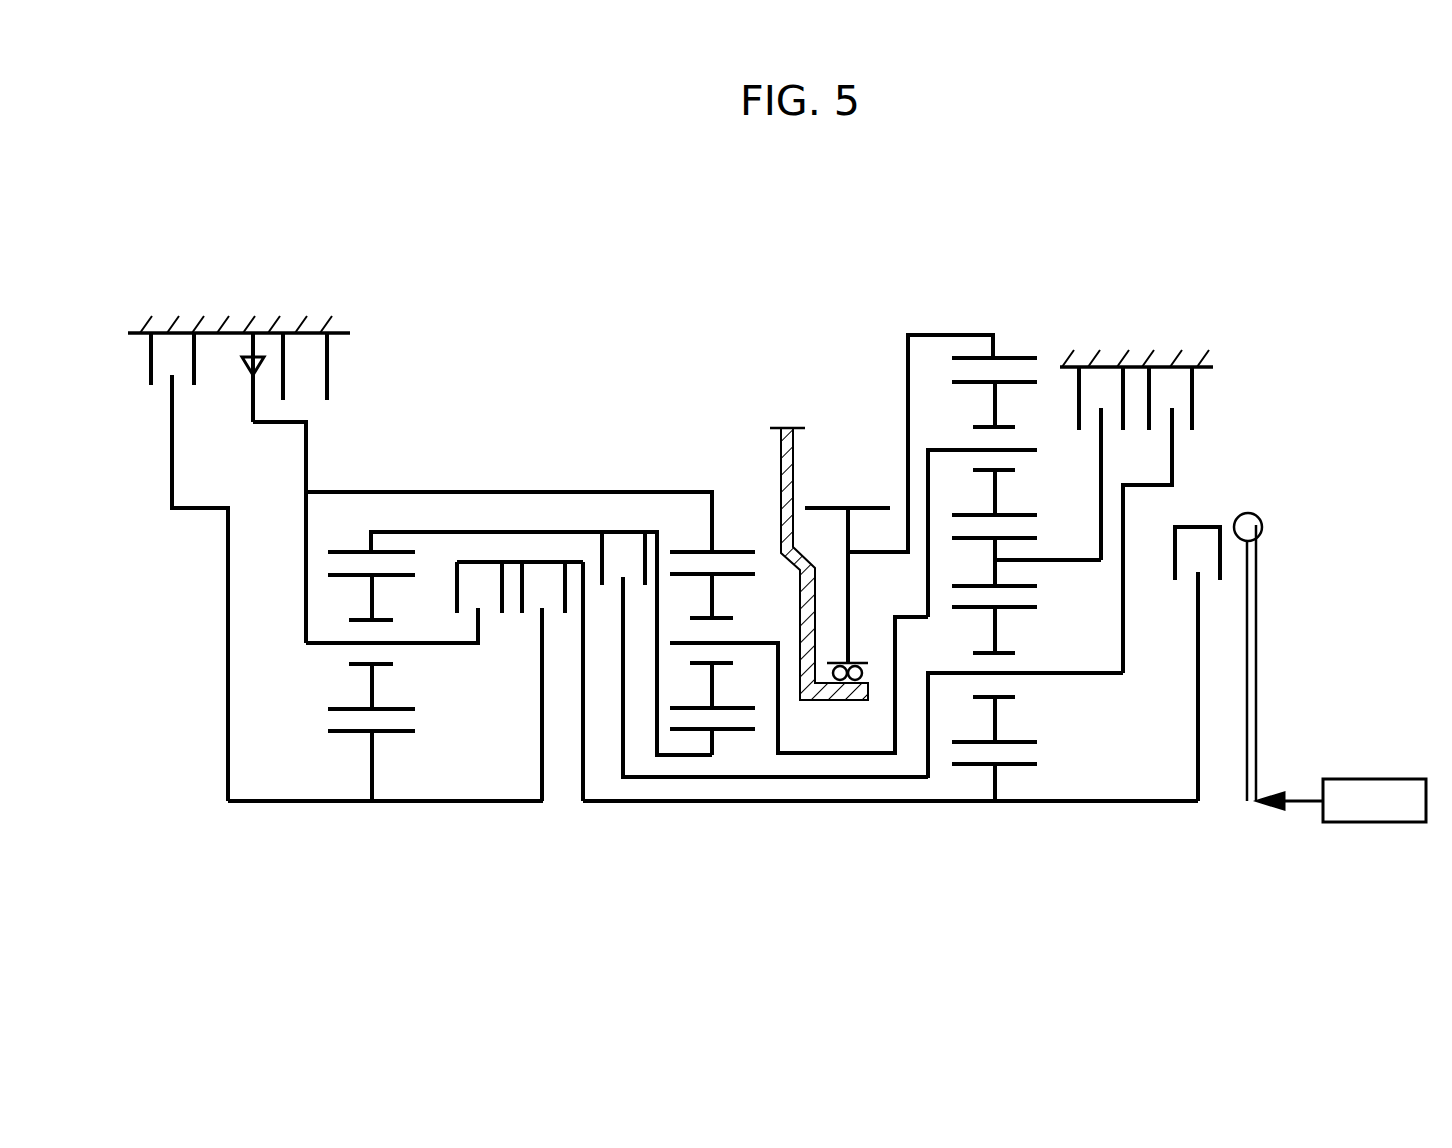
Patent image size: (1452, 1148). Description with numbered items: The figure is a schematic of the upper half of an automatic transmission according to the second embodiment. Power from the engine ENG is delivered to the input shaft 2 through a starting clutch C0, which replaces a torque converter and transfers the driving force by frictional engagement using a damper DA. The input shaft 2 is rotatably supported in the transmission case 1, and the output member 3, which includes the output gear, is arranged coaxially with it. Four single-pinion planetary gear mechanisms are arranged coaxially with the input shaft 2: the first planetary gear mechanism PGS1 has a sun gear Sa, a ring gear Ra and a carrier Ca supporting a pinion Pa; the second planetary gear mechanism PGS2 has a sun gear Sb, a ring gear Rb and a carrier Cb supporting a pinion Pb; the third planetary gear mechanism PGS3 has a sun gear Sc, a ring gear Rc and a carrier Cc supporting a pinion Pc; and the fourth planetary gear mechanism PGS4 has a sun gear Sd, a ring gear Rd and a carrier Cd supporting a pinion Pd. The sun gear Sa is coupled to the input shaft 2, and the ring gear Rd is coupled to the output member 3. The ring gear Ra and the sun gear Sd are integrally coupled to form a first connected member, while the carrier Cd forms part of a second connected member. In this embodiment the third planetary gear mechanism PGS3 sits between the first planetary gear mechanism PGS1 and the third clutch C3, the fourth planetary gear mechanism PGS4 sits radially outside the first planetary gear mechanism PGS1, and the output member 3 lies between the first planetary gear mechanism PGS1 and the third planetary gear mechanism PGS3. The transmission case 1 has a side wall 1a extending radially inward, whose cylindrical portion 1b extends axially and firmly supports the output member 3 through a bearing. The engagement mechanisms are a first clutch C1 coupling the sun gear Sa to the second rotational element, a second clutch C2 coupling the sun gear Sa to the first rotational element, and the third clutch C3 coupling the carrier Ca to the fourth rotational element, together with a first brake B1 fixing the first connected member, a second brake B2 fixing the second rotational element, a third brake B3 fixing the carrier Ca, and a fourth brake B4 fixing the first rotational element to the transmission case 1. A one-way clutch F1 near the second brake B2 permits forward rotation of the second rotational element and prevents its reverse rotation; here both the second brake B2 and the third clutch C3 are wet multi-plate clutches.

The transmission case 1 is at (263, 318).
The side wall 1a is at (797, 428).
The cylindrical portion 1b is at (855, 703).
The input shaft 2 is at (1168, 805).
The output member 3 is at (880, 505).
The first brake B1 is at (1101, 463).
The second brake B2 is at (305, 366).
The third brake B3 is at (1157, 520).
The fourth brake B4 is at (189, 567).
The one-way clutch F1 is at (245, 370).
The starting clutch C0 is at (1197, 664).
The first clutch C1 is at (520, 587).
The second clutch C2 is at (552, 681).
The third clutch C3 is at (765, 654).
The first planetary gear mechanism PGS1 is at (1003, 823).
The second planetary gear mechanism PGS2 is at (376, 821).
The third planetary gear mechanism PGS3 is at (721, 823).
The fourth planetary gear mechanism PGS4 is at (1003, 308).
The sun gear Sa is at (974, 765).
The pinion Pa is at (962, 743).
The ring gear Ra is at (1015, 588).
The carrier Ca is at (1077, 676).
The sun gear Sb is at (351, 732).
The pinion Pb is at (338, 710).
The ring gear Rb is at (400, 553).
The carrier Cb is at (311, 648).
The sun gear Sc is at (692, 732).
The pinion Pc is at (680, 709).
The ring gear Rc is at (683, 548).
The carrier Cc is at (760, 642).
The sun gear Sd is at (1020, 535).
The pinion Pd is at (1013, 380).
The ring gear Rd is at (960, 355).
The carrier Cd is at (940, 448).
The damper DA is at (1270, 512).
The engine ENG is at (1342, 800).